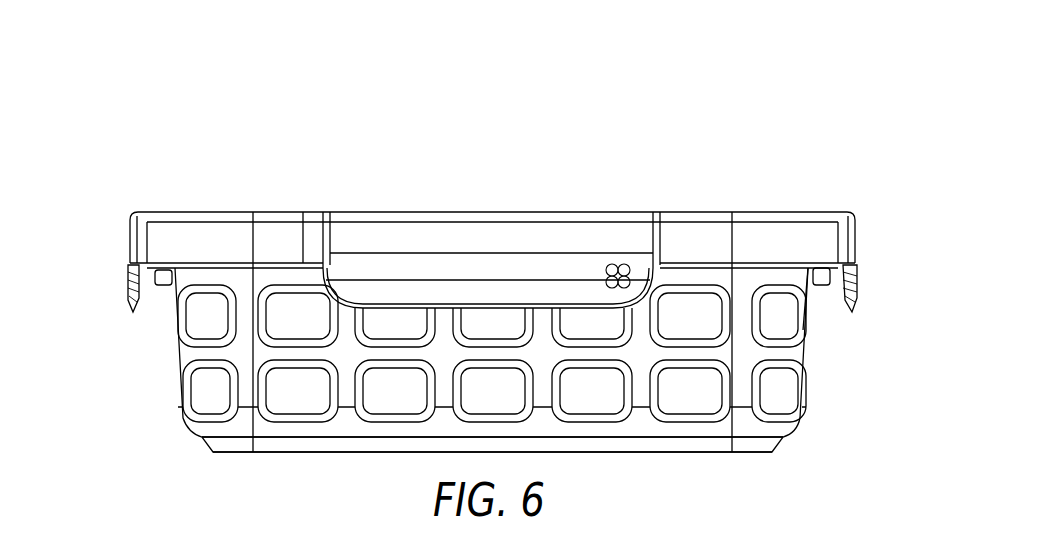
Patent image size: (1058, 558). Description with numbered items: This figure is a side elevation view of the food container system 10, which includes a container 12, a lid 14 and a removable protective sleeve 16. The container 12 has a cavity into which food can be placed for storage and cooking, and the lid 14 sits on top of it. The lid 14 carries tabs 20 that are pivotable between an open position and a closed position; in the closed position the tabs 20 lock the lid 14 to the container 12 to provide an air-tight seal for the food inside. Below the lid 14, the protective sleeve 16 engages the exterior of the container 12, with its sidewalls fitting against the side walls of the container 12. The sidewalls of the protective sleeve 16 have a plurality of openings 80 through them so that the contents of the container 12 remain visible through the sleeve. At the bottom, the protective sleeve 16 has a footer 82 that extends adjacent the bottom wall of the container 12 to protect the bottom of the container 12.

The food container system 10 is at (777, 153).
The container 12 is at (688, 312).
The lid 14 is at (828, 210).
The protective sleeve 16 is at (797, 353).
The tabs 20 is at (128, 285).
The openings 80 is at (803, 323).
The footer 82 is at (743, 452).